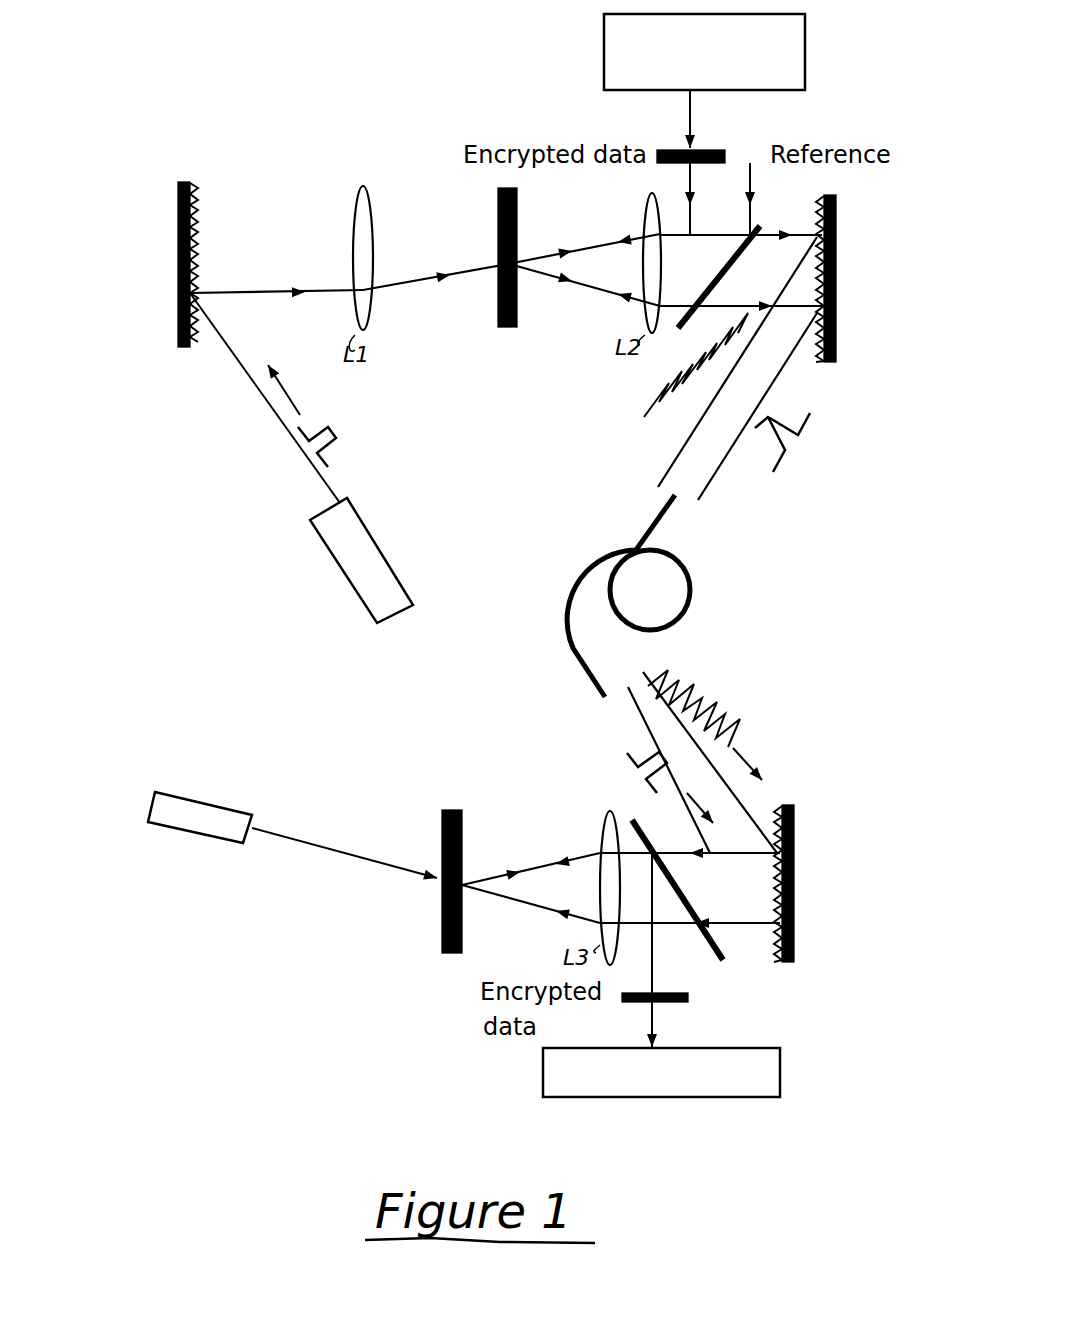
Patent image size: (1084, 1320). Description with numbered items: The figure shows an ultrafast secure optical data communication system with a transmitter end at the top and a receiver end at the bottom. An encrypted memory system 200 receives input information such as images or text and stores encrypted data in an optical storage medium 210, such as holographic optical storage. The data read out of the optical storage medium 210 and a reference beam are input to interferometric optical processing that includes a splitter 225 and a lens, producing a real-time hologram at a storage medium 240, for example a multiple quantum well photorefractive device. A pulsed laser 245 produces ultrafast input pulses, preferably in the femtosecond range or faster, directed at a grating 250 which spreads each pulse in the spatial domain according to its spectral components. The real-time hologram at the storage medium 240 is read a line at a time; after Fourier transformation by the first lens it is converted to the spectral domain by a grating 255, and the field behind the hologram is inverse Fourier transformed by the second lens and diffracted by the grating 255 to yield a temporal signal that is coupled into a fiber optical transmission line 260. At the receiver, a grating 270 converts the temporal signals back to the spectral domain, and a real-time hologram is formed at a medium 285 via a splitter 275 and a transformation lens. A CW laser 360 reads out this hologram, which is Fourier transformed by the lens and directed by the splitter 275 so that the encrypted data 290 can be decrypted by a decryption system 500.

The encrypted memory system 200 is at (806, 32).
The optical storage medium 210 is at (718, 152).
The splitter 225 is at (755, 232).
The storage medium 240 is at (498, 200).
The pulsed laser 245 is at (360, 553).
The grating 250 is at (178, 190).
The grating 255 is at (838, 205).
The fiber optical transmission line 260 is at (569, 626).
The grating 270 is at (795, 830).
The splitter 275 is at (717, 950).
The medium 285 is at (442, 937).
The encrypted data 290 is at (636, 1003).
The CW laser 360 is at (212, 822).
The decryption system 500 is at (780, 1062).